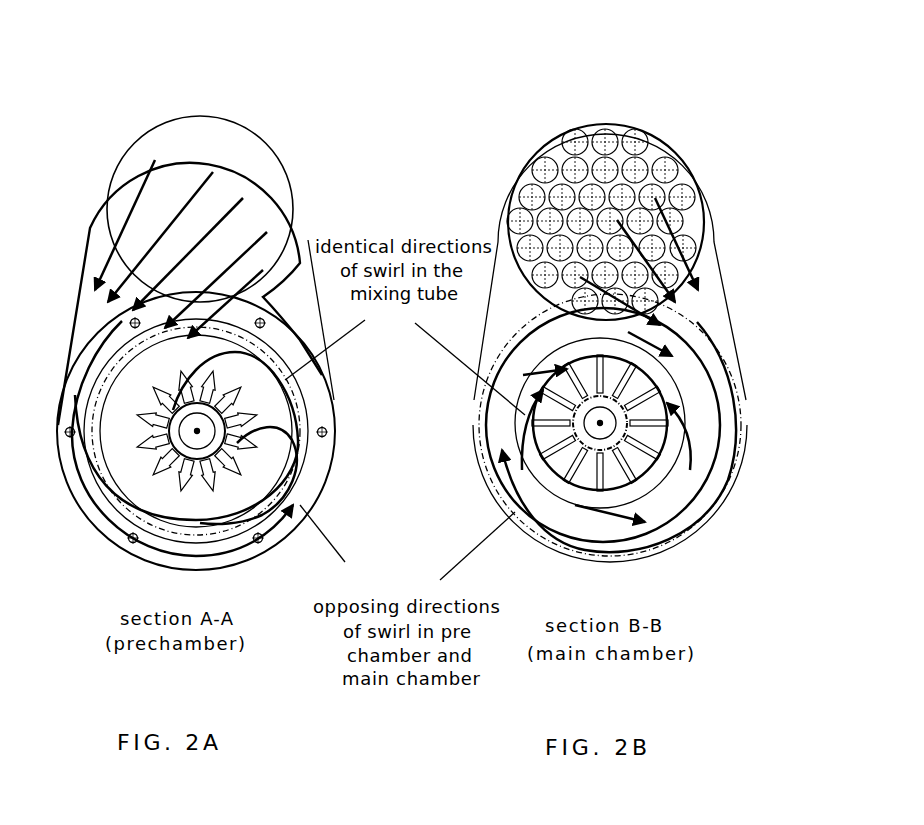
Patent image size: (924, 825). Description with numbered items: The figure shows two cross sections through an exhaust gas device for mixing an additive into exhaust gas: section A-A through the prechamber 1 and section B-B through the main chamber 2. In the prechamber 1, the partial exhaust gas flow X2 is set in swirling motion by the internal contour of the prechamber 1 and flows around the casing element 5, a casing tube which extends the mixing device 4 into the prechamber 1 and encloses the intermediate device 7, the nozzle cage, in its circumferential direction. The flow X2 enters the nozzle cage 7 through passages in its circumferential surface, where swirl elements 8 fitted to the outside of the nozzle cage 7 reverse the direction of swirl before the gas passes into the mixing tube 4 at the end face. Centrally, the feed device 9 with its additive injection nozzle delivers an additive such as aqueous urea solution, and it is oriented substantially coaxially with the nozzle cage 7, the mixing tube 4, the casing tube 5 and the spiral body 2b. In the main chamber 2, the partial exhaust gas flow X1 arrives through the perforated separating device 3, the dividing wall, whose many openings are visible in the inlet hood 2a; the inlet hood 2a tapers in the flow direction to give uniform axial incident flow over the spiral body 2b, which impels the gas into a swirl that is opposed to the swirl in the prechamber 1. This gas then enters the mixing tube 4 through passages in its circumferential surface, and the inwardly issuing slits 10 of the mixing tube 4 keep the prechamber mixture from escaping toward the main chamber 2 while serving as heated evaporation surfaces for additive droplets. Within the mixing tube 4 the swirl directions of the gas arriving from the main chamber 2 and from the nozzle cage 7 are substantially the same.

In FIG. 2A, the prechamber 1 is at (112, 95).
In FIG. 2B, the main chamber 2 is at (550, 75).
In FIG. 2B, the inlet hood 2a is at (536, 142).
In FIG. 2B, the spiral body 2b is at (510, 337).
In FIG. 2B, the perforated separating device 3 is at (600, 140).
In FIG. 2B, the mixing device 4 is at (665, 500).
In FIG. 2A, the casing element 5 is at (307, 417).
In FIG. 2A, the intermediate device 7 is at (127, 407).
In FIG. 2A, the swirl elements 8 is at (262, 456).
In FIG. 2A, the feed device 9 is at (206, 448).
In FIG. 2B, the feed device 9 is at (687, 390).
In FIG. 2B, the slits 10 is at (690, 445).
In FIG. 2B, the partial exhaust gas flow X1 is at (720, 325).
In FIG. 2A, the partial exhaust gas flow X2 is at (100, 320).